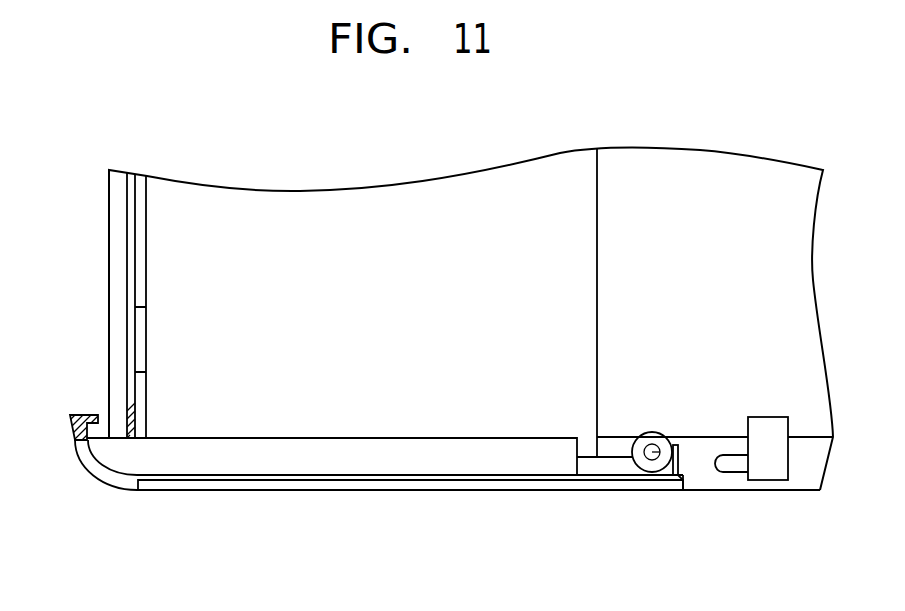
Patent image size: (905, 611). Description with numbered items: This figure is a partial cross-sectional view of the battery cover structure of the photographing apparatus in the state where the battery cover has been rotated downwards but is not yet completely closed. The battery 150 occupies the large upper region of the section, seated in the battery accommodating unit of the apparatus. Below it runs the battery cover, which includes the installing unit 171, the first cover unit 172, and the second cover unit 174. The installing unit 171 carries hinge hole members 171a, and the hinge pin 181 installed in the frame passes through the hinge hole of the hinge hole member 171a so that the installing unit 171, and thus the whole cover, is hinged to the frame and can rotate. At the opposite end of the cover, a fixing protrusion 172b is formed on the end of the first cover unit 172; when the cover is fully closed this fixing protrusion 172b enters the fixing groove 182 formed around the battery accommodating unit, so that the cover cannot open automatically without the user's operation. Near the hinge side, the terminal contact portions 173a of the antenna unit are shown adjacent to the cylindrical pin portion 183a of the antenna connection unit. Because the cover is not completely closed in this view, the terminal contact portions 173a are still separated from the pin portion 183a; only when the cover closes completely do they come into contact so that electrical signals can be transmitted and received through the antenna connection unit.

The battery 150 is at (363, 212).
The installing unit 171 is at (600, 467).
The hinge hole member 171a is at (662, 467).
The first cover unit 172 is at (330, 475).
The fixing protrusion 172b is at (93, 415).
The terminal contact portion 173a is at (680, 447).
The second cover unit 174 is at (387, 485).
The hinge pin 181 is at (652, 457).
The fixing groove 182 is at (136, 421).
The pin portion 183a is at (730, 458).